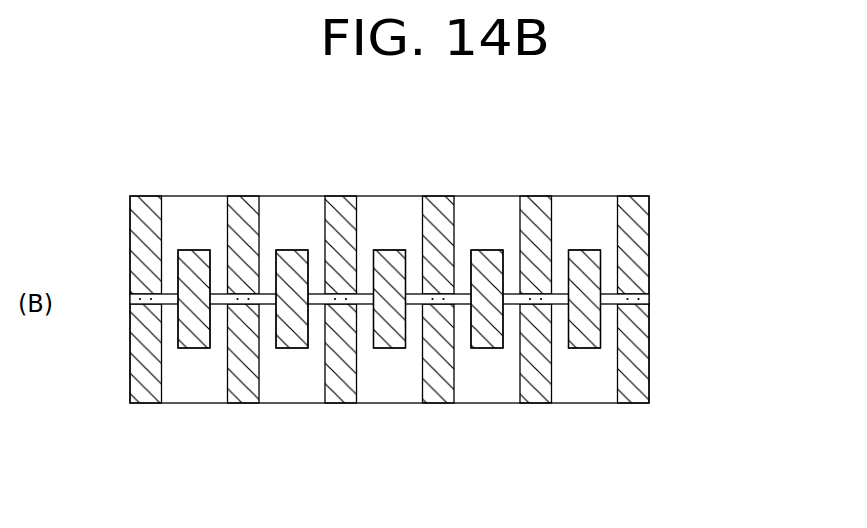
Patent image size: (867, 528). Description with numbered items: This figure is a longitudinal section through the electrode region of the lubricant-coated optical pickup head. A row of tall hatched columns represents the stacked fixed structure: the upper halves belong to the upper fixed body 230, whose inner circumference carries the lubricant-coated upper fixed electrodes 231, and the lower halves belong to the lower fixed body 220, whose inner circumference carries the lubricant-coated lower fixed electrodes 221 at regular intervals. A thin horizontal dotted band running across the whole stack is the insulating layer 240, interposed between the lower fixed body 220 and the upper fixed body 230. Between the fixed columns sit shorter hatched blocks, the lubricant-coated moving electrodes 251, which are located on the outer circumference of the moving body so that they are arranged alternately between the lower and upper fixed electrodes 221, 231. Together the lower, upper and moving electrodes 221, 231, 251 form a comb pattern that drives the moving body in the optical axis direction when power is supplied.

The upper fixed body 230 is at (439, 189).
The upper fixed electrode 231 is at (628, 200).
The lower fixed body 220 is at (442, 410).
The lower fixed electrode 221 is at (542, 388).
The insulating layer 240 is at (642, 297).
The moving electrode 251 is at (290, 345).